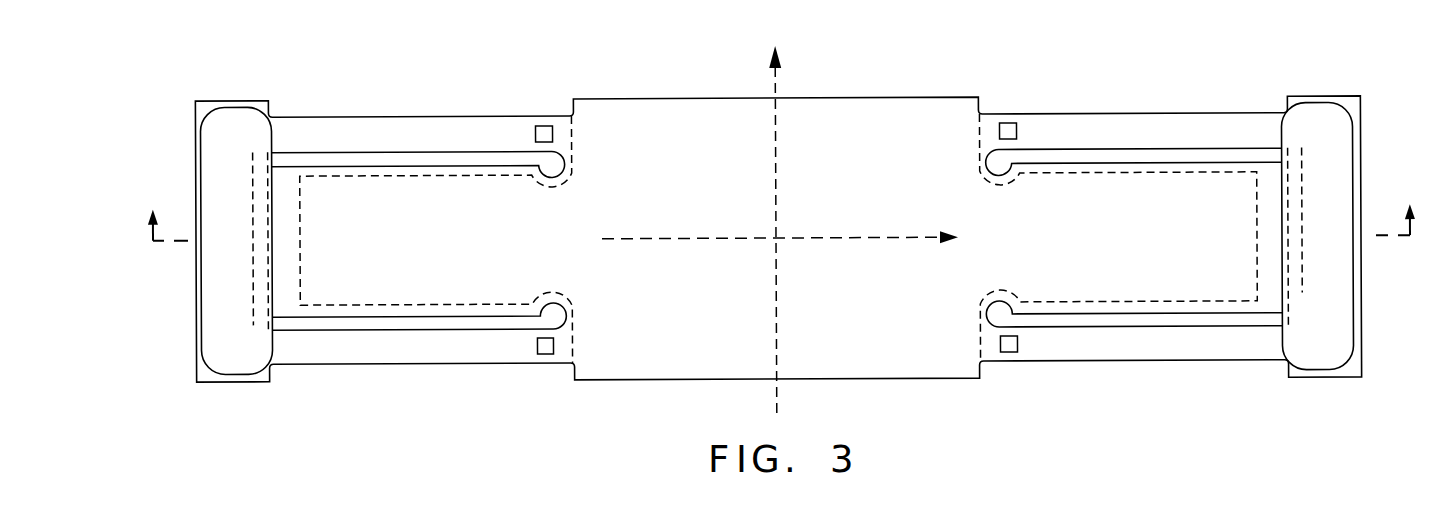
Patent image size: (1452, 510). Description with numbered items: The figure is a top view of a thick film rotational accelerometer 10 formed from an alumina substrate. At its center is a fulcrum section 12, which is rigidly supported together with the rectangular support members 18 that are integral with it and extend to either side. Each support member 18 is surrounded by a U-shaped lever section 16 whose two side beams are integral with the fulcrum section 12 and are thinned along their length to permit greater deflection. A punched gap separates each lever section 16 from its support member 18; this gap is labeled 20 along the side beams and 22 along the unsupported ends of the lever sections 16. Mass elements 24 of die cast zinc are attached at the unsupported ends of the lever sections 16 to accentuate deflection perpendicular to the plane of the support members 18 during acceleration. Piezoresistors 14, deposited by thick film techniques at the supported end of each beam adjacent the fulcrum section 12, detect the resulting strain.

The thick film rotational accelerometer 10 is at (744, 85).
The fulcrum section 12 is at (893, 120).
The piezoresistors 14 is at (540, 127).
The U-shaped lever sections 16 is at (197, 108).
The support members 18 is at (416, 287).
The gap along side beams 20 is at (350, 157).
The gap along unsupported ends 22 is at (250, 276).
The mass elements 24 is at (238, 123).